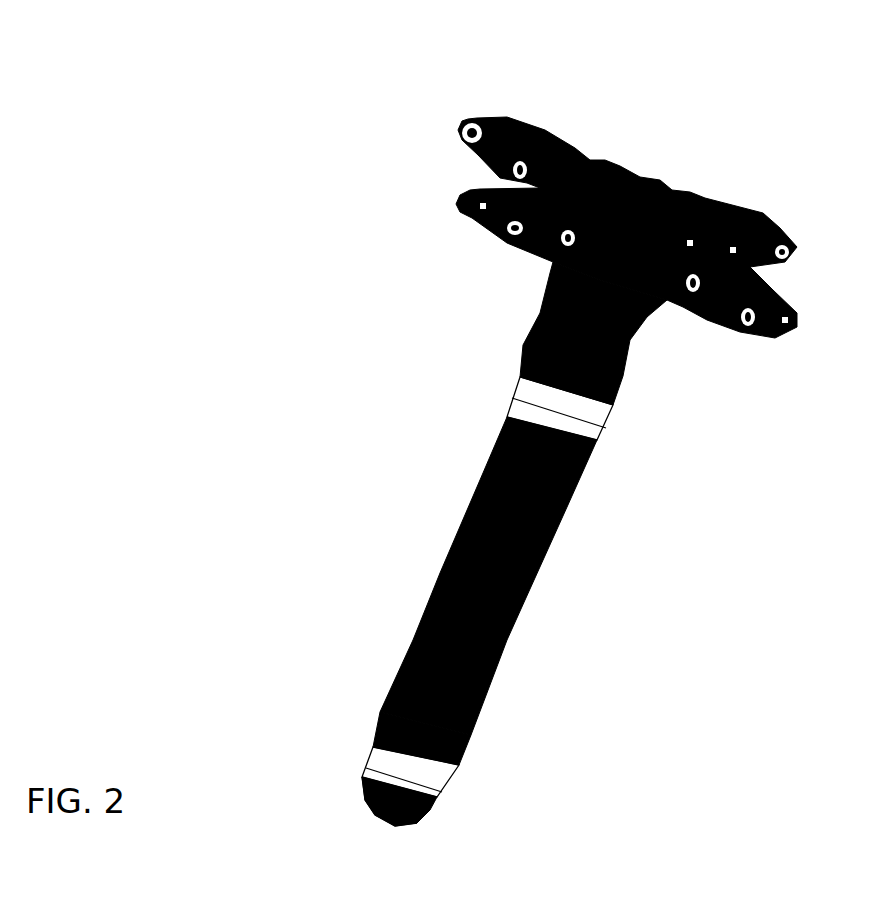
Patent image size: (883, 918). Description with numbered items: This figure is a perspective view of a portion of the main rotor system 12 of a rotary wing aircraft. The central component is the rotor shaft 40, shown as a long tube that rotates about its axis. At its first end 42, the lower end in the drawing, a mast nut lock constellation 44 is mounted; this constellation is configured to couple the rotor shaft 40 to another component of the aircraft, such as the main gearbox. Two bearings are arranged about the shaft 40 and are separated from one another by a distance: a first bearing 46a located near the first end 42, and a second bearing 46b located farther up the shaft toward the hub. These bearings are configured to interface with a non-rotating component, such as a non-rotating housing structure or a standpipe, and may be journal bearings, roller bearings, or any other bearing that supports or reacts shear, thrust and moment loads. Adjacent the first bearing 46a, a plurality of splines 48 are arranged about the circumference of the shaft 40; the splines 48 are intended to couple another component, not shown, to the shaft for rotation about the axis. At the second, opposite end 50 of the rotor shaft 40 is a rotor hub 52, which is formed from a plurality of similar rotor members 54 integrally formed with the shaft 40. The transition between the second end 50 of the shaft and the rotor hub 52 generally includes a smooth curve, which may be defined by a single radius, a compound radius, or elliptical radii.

The main rotor system 12 is at (168, 213).
The rotor hub 52 is at (594, 121).
The rotor members 54 is at (506, 186).
The second end 50 is at (673, 300).
The second bearing 46b is at (606, 417).
The rotor shaft 40 is at (518, 604).
The splines 48 is at (380, 722).
The first bearing 46a is at (437, 793).
The mast nut lock constellation 44 is at (410, 827).
The first end 42 is at (357, 803).